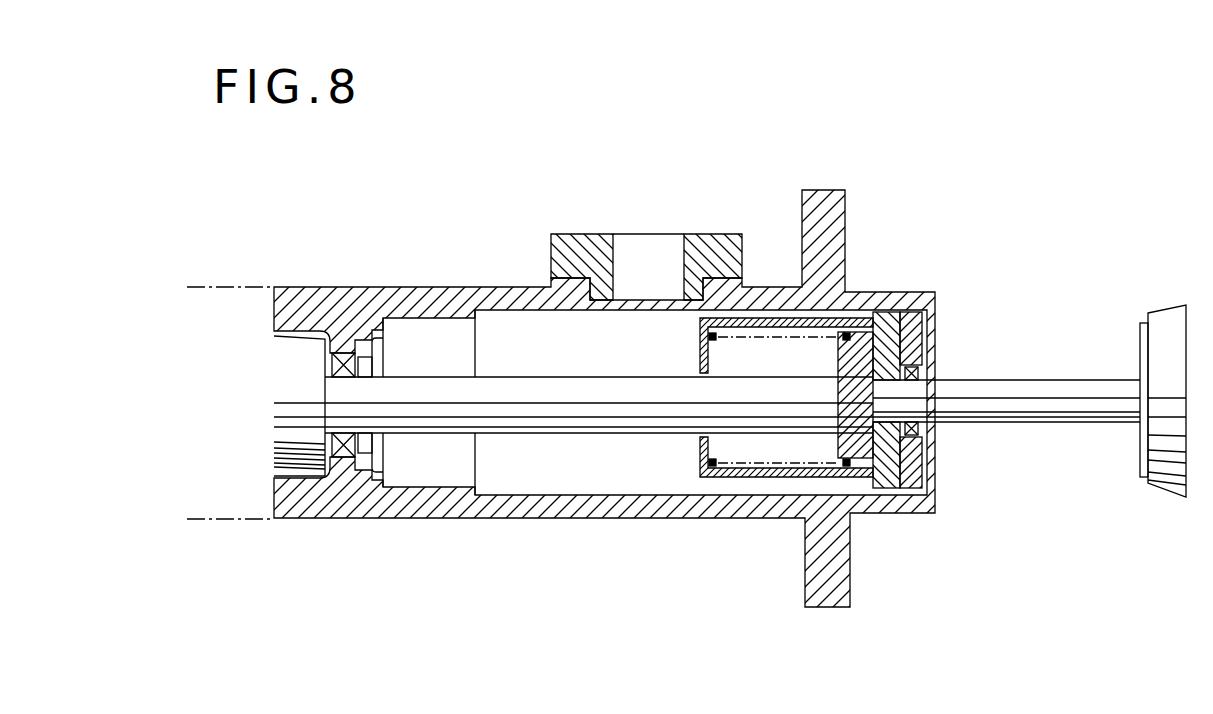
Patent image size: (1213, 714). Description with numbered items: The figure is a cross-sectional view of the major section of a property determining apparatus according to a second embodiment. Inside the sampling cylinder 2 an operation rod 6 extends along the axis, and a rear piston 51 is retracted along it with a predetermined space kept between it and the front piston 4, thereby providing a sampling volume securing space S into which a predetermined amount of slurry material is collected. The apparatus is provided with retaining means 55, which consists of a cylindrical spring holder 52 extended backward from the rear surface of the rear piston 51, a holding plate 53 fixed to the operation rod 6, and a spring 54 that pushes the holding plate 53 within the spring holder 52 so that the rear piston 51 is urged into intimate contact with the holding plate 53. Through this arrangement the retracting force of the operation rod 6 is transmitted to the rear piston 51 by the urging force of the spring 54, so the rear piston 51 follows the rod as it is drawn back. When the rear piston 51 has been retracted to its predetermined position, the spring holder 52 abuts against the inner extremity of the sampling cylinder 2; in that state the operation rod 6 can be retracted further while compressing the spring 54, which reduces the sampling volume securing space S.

The sampling cylinder 2 is at (477, 287).
The front piston 4 is at (1160, 487).
The operation rod 6 is at (1050, 383).
The rear piston 51 is at (920, 457).
The cylindrical spring holder 52 is at (760, 492).
The holding plate 53 is at (866, 453).
The spring 54 is at (716, 478).
The retaining means 55 is at (680, 470).
The sampling volume securing space S is at (1140, 447).